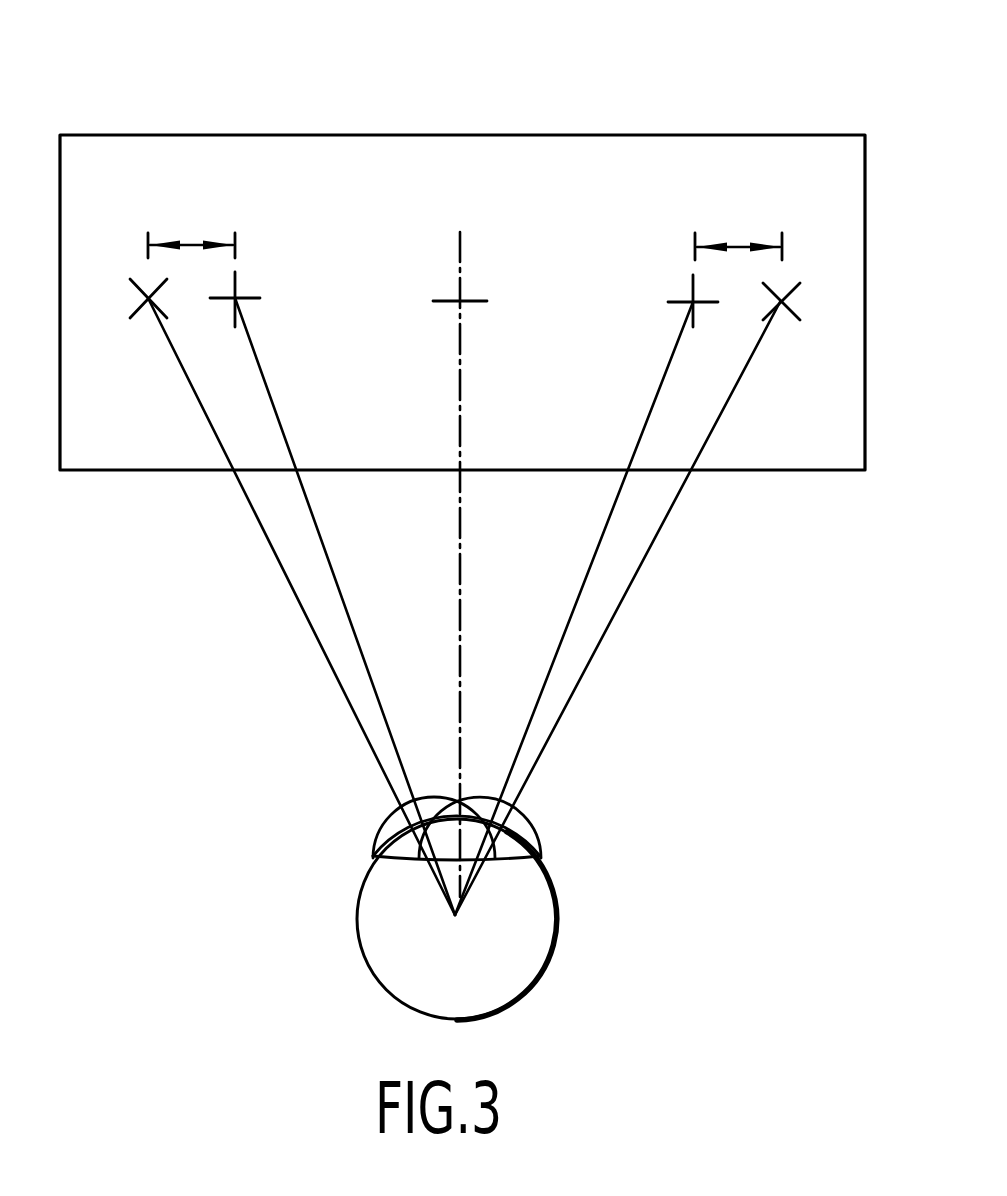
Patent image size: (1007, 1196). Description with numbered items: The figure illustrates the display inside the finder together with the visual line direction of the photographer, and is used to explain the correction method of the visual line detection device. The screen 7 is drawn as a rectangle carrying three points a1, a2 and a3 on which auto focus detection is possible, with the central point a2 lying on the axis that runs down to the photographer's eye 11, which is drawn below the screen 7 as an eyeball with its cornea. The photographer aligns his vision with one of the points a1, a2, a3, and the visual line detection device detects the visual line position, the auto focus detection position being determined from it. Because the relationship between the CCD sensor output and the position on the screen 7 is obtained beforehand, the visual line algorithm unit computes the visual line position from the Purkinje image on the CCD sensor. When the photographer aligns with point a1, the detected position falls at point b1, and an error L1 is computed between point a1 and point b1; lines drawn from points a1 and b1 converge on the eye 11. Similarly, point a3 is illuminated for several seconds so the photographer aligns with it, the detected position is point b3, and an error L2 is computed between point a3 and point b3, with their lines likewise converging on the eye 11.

The screen 7 is at (809, 135).
The photographer's eye 11 is at (553, 900).
The point a1 is at (227, 315).
The point a2 is at (470, 332).
The point a3 is at (701, 318).
The point b1 is at (141, 320).
The point b3 is at (796, 328).
The error L1 is at (191, 224).
The error L2 is at (738, 225).